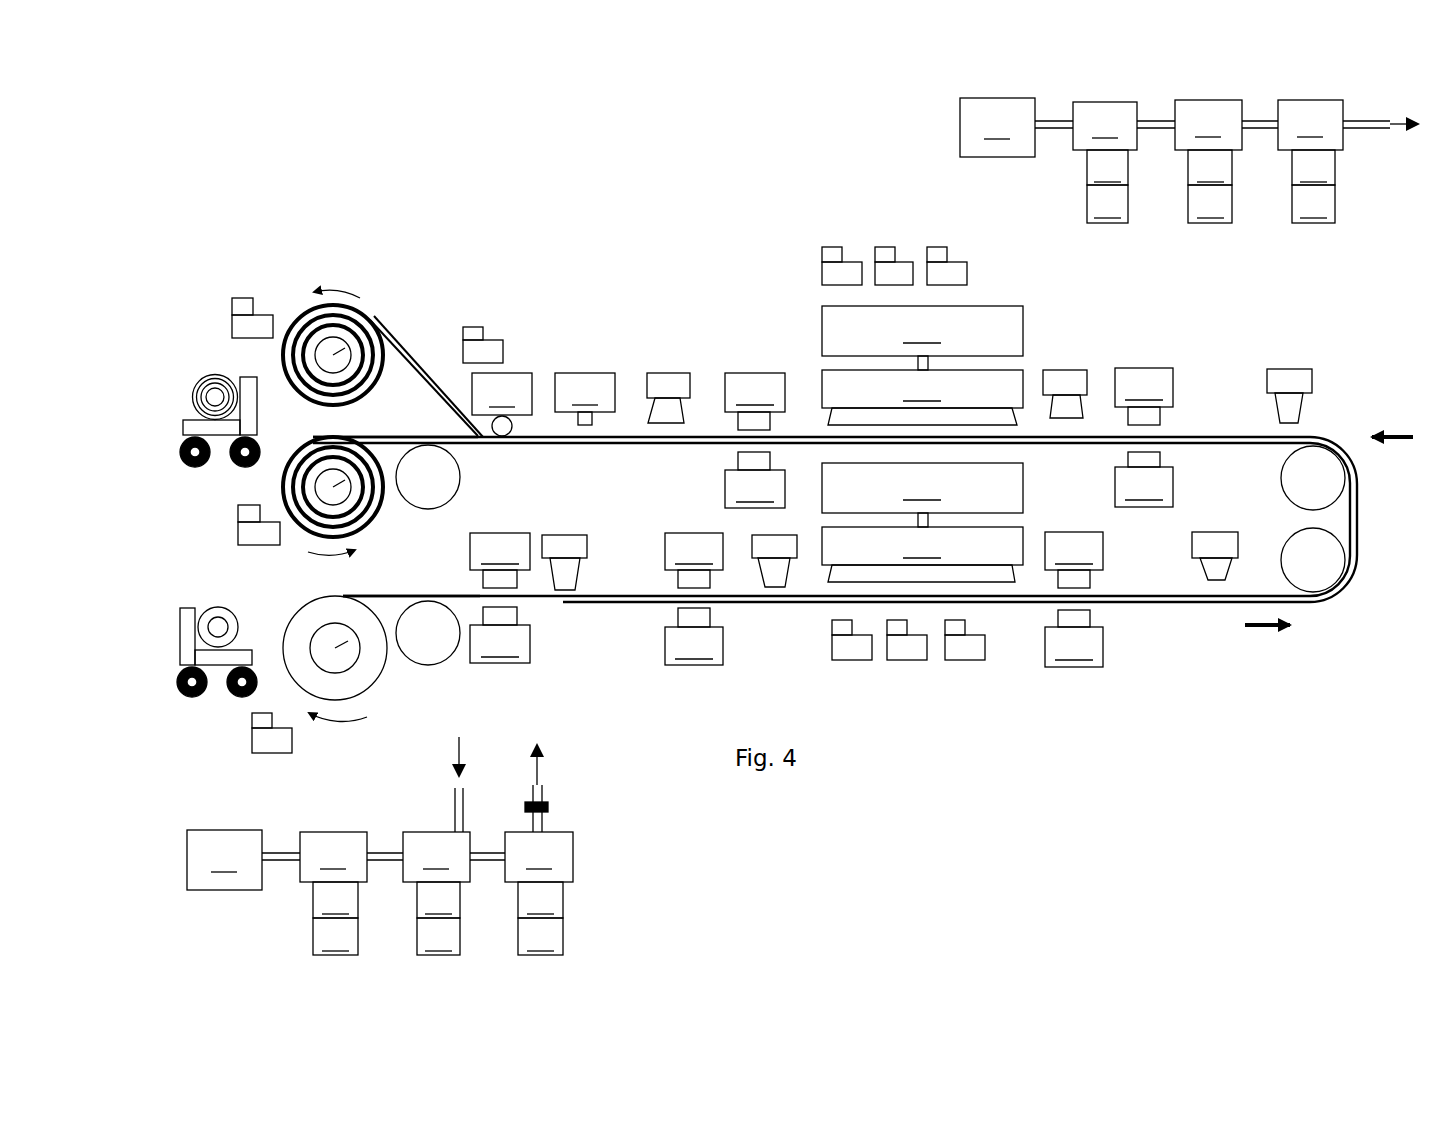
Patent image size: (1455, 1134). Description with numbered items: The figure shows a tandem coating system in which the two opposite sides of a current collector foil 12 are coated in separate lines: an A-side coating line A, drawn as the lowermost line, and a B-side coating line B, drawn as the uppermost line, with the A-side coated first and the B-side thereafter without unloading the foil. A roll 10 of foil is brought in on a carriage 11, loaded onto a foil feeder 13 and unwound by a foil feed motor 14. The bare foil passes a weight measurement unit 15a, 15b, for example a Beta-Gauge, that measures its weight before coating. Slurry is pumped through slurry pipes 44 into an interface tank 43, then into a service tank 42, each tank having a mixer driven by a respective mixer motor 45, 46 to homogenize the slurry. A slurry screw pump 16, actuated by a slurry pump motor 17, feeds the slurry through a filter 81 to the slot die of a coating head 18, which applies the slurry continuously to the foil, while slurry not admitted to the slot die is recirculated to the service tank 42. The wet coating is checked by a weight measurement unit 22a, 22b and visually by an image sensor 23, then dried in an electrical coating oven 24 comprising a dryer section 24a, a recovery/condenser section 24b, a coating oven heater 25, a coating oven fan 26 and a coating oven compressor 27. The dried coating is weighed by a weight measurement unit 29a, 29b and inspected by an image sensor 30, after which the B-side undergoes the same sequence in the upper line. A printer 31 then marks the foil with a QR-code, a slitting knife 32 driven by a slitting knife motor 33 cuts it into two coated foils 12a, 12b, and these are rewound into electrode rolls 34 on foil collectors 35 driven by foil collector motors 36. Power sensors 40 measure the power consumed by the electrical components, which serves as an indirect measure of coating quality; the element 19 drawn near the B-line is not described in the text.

The roll 10 is at (212, 615).
The carriage 11 is at (188, 428).
The current collector foil 12 is at (358, 690).
The coated foil 12a is at (405, 378).
The coated foil 12b is at (383, 437).
The foil feeder 13 is at (333, 648).
The foil feed motor 14 is at (285, 752).
The weight measurement unit 15a is at (500, 635).
The weight measurement unit 15b is at (500, 560).
The slurry screw pump 16 is at (924, 491).
The slurry pump motor 17 is at (926, 534).
The coating head 18 is at (1296, 405).
The nozzle 19 is at (1295, 382).
The weight measurement unit 22a is at (919, 478).
The weight measurement unit 22b is at (919, 558).
The image sensor 23 is at (1068, 382).
The coating oven 24 is at (954, 410).
The dryer section 24a is at (922, 476).
The recovery/condenser section 24b is at (922, 409).
The coating oven heater 25 is at (857, 270).
The coating oven fan 26 is at (912, 270).
The coating oven compressor 27 is at (967, 270).
The weight measurement unit 29a is at (914, 480).
The weight measurement unit 29b is at (914, 559).
The image sensor 30 is at (668, 380).
The printer 31 is at (585, 399).
The slitting knife 32 is at (502, 404).
The slitting knife motor 33 is at (492, 352).
The electrode roll 34 is at (370, 332).
The foil collector 35 is at (330, 358).
The foil collector motor 36 is at (262, 330).
The power sensor 40 is at (248, 308).
The service tank 42 is at (822, 491).
The interface tank 43 is at (718, 492).
The slurry pipes 44 is at (611, 494).
The mixer motor 45 is at (824, 534).
The mixer motor 46 is at (720, 534).
The filter 81 is at (550, 807).
The A-side coating line A is at (393, 596).
The B-side coating line B is at (545, 602).